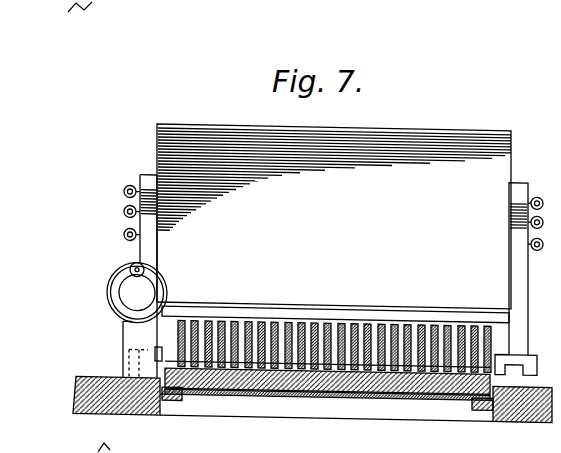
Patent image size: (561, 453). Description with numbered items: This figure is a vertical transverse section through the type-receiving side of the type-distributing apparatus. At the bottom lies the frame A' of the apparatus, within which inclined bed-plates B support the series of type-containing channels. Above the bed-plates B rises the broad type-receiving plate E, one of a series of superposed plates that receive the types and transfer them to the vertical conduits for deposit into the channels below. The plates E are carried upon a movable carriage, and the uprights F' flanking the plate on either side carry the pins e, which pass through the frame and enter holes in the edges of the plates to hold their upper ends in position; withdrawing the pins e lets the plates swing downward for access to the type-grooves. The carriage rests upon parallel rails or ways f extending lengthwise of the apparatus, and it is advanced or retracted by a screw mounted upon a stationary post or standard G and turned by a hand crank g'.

The type-receiving plates E is at (334, 223).
The standards (upright posts) F' is at (334, 279).
The pins e is at (332, 218).
The crank g' is at (137, 292).
The stationary post or standard G is at (145, 356).
The rails or ways f is at (327, 385).
The inclined bed-plates B is at (327, 384).
The frame A' is at (312, 399).